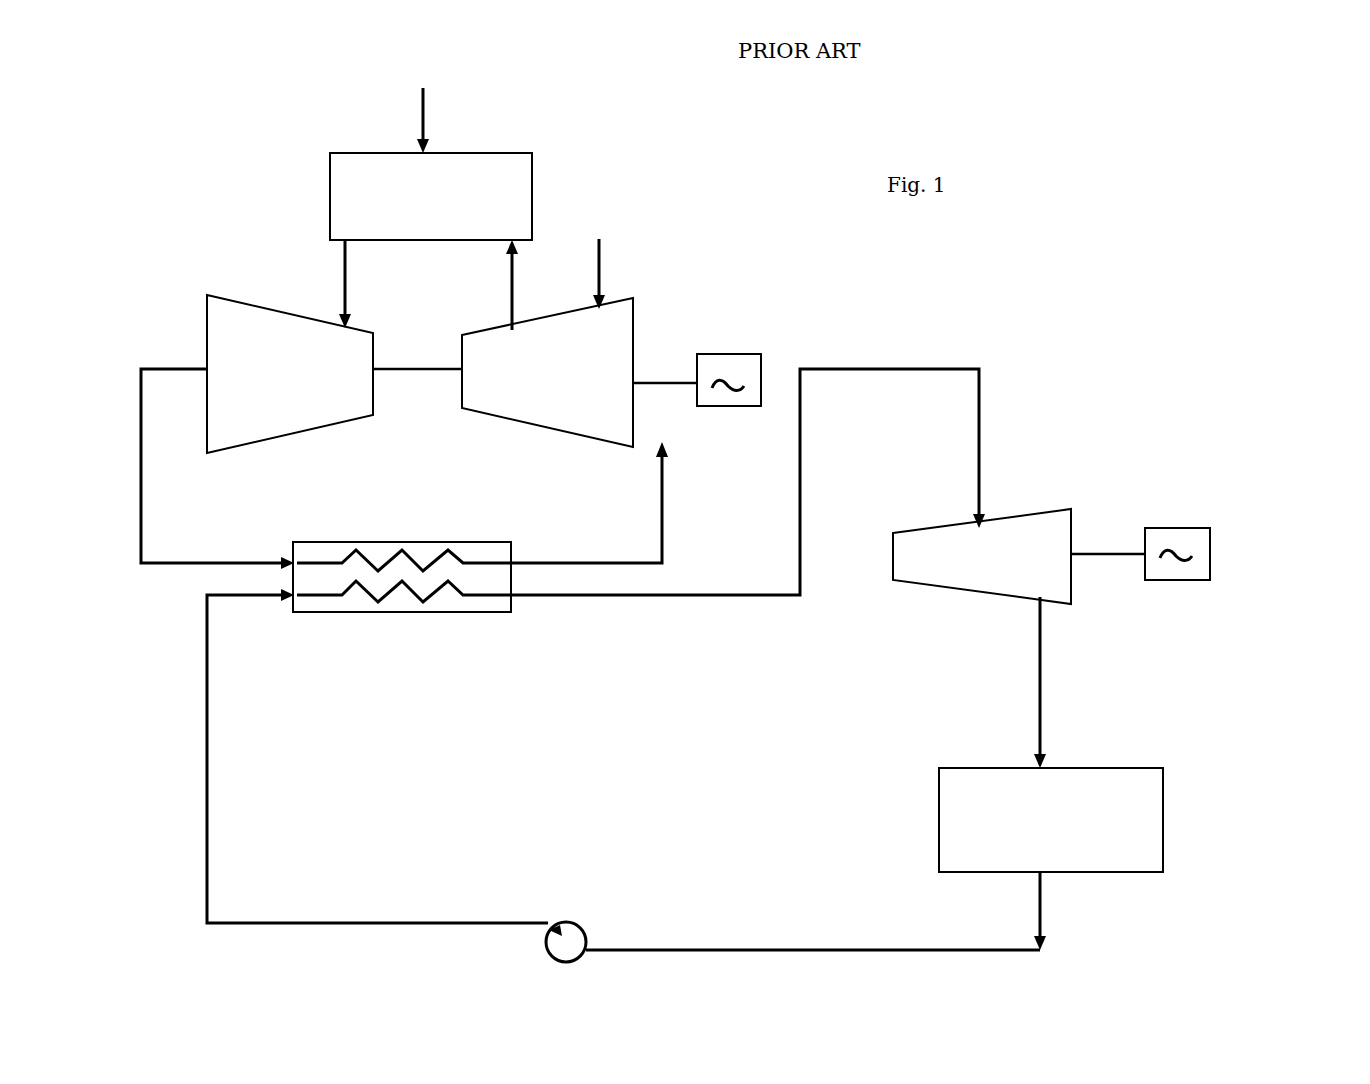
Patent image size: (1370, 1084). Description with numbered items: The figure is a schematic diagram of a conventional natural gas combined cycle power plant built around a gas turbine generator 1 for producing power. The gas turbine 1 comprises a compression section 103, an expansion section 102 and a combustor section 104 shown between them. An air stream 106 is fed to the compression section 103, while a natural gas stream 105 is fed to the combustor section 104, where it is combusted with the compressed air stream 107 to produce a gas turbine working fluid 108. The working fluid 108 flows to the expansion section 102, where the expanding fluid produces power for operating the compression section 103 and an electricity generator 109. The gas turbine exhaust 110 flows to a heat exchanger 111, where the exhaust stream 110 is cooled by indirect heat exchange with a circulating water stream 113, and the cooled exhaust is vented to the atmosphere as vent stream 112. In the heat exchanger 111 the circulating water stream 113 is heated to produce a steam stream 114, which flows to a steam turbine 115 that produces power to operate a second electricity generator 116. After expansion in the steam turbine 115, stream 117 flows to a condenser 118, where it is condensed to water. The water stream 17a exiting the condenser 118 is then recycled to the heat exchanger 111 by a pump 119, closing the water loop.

The gas turbine generator 1 is at (626, 176).
The expansion section 102 is at (294, 436).
The compression section 103 is at (506, 438).
The combustor section 104 is at (324, 192).
The natural gas stream 105 is at (466, 131).
The air stream 106 is at (626, 239).
The compressed air stream 107 is at (487, 286).
The gas turbine working fluid 108 is at (314, 284).
The electricity generator 109 is at (718, 343).
The gas turbine exhaust 110 is at (177, 522).
The heat exchanger 111 is at (373, 627).
The vent stream 112 is at (673, 543).
The circulating water stream 113 is at (246, 846).
The steam stream 114 is at (902, 338).
The steam turbine 115 is at (1043, 497).
The electricity generator 116 is at (1225, 543).
The expanded steam stream 117 is at (1053, 677).
The condenser 118 is at (1184, 819).
The pump 119 is at (572, 901).
The water stream 17a is at (770, 932).